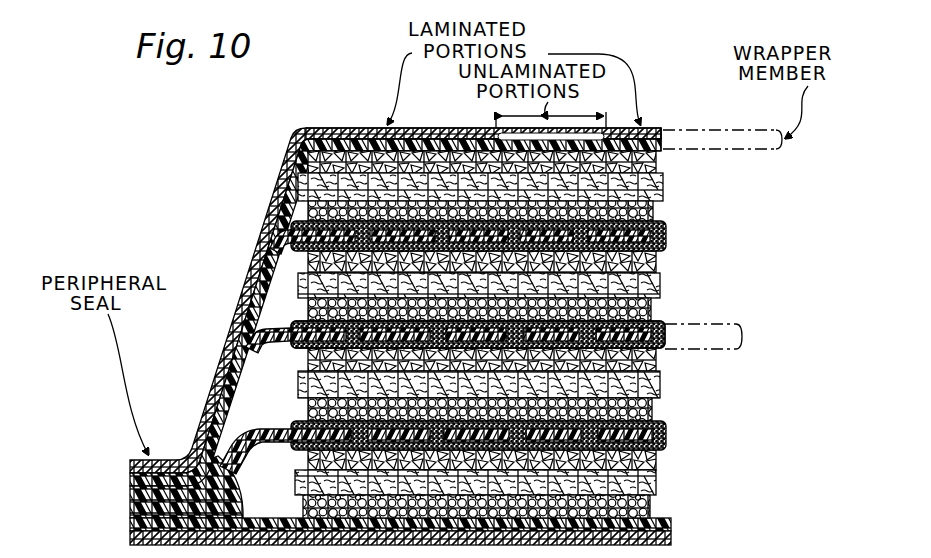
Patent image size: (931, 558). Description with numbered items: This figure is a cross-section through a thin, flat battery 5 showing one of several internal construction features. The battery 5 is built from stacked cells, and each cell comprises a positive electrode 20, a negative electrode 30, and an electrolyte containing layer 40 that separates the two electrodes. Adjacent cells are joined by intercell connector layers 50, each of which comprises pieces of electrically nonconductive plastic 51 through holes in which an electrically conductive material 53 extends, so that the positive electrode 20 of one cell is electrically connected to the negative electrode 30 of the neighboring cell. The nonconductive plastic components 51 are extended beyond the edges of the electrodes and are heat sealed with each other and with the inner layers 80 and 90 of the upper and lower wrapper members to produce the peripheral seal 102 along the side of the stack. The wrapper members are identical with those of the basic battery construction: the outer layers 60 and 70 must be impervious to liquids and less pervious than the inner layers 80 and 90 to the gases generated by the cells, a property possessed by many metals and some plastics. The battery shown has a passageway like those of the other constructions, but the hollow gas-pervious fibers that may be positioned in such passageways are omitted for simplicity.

The thin, flat battery 5 is at (327, 116).
The positive electrode 20 is at (648, 160).
The negative electrode 30 is at (645, 203).
The electrolyte containing layer 40 is at (655, 183).
The intercell connector layer 50 is at (537, 337).
The electrically nonconductive plastic 51 is at (658, 228).
The electrically conductive material 53 is at (658, 217).
The outer wrapper layer 60 is at (651, 120).
The outer wrapper layer 70 is at (663, 530).
The inner wrapper layer 80 is at (653, 138).
The inner wrapper layer 90 is at (663, 517).
The peripheral seal 102 is at (120, 482).